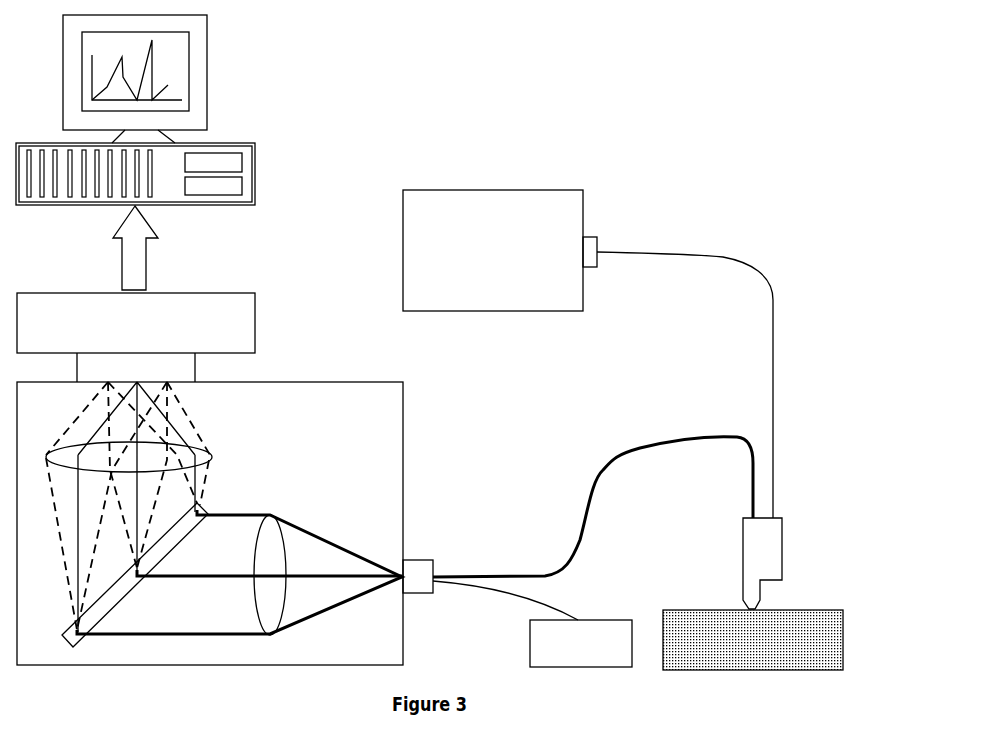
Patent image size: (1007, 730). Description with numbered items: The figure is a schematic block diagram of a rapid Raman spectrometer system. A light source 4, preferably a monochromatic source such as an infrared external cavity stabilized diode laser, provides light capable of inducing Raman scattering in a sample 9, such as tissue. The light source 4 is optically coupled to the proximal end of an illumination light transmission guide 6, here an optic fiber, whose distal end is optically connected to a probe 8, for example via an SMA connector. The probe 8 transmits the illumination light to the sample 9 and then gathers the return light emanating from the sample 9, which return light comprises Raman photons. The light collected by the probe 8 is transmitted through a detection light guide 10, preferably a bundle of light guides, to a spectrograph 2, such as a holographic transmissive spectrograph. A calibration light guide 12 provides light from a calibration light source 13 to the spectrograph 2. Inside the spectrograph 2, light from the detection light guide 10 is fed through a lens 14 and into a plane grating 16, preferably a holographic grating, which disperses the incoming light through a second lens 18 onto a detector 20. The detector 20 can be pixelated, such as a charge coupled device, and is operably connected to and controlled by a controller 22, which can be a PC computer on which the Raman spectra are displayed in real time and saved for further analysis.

The spectrograph 2 is at (415, 417).
The light source 4 is at (496, 190).
The illumination light transmission guide 6 is at (722, 257).
The probe 8 is at (782, 548).
The sample 9 is at (843, 637).
The detection light guide 10 is at (620, 457).
The calibration light guide 12 is at (546, 600).
The calibration light source 13 is at (579, 667).
The lens 14 is at (283, 521).
The plane grating 16 is at (207, 505).
The second lens 18 is at (200, 445).
The detector 20 is at (255, 325).
The controller 22 is at (256, 173).